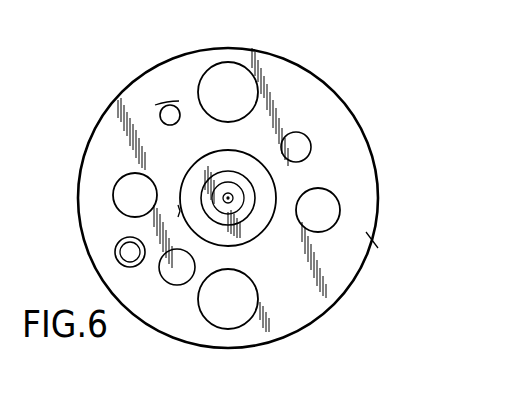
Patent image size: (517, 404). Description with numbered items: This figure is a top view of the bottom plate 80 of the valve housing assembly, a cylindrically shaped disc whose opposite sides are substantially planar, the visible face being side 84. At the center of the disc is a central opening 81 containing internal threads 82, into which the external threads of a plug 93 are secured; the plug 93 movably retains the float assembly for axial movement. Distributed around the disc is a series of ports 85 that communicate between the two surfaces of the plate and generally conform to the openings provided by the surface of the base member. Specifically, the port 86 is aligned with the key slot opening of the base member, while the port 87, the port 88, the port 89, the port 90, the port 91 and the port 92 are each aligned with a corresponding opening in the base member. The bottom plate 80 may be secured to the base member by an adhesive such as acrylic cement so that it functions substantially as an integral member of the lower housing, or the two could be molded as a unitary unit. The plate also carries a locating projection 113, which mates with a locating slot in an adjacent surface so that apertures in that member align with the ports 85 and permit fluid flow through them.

The bottom plate 80 is at (341, 96).
The central opening 81 is at (274, 196).
The internal threads 82 is at (258, 235).
The side 84 is at (356, 240).
The ports 85 is at (195, 82).
The port 86 is at (143, 203).
The port 87 is at (302, 137).
The port 88 is at (167, 129).
The port 89 is at (236, 101).
The port 90 is at (236, 307).
The port 91 is at (166, 279).
The port 92 is at (330, 225).
The plug 93 is at (180, 211).
The locating projection 113 is at (126, 261).